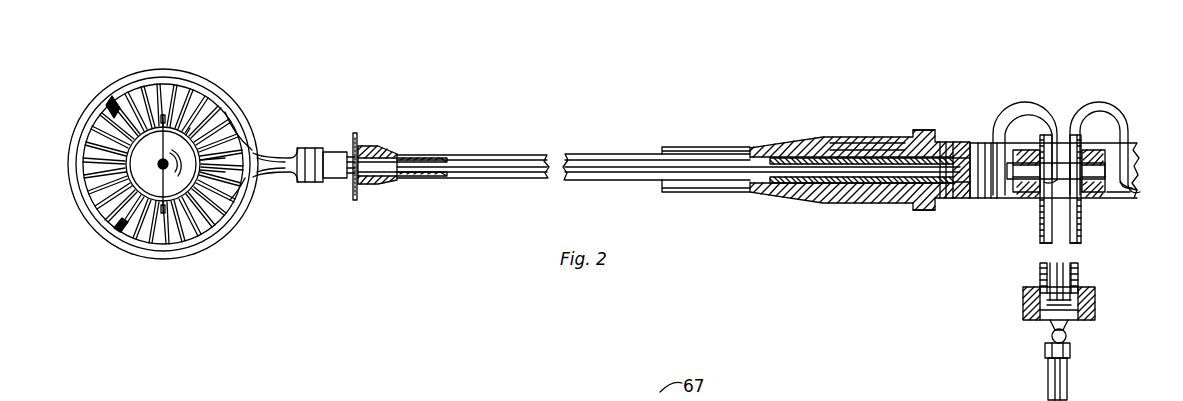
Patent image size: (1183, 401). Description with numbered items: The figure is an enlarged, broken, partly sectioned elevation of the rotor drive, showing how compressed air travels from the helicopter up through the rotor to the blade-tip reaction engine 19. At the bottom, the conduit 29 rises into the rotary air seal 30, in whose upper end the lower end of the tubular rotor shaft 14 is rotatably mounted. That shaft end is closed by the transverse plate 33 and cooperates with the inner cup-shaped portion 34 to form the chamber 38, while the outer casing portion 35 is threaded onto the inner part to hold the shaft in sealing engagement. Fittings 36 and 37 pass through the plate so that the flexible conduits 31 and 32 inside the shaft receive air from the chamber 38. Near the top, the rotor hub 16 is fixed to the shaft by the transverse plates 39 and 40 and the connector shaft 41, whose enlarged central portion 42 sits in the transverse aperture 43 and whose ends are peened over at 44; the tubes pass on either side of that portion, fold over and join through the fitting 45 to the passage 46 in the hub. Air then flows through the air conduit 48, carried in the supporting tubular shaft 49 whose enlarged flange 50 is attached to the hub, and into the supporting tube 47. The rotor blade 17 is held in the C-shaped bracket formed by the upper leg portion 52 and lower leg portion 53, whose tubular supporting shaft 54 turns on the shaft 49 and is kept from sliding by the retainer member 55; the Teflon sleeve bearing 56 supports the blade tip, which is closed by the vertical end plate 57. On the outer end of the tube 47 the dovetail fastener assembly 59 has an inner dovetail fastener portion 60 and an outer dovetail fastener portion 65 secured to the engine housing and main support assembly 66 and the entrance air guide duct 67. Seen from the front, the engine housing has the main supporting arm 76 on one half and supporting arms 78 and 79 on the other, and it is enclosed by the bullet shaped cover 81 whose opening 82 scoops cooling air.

The rotor shaft 14 is at (1088, 217).
The rotor hub 16 is at (982, 140).
The rotor blade 17 is at (507, 152).
The reaction engine 19 is at (162, 66).
The conduit 29 is at (1067, 386).
The rotary air seal 30 is at (1020, 298).
The flexible conduit 31 is at (1046, 244).
The flexible conduit 32 is at (1076, 244).
The transverse plate 33 is at (1066, 325).
The inner cup-shaped portion 34 is at (1070, 348).
The outer casing portion 35 is at (1095, 302).
The fitting 36 is at (1040, 280).
The fitting 37 is at (1078, 282).
The chamber 38 is at (1052, 327).
The transverse plate 39 is at (1040, 163).
The transverse plate 40 is at (1130, 198).
The connector shaft 41 is at (1122, 188).
The enlarged central portion 42 is at (1086, 163).
The transverse aperture 43 is at (1060, 135).
The peened ends 44 is at (982, 205).
The fitting 45 is at (968, 200).
The passage 46 is at (958, 190).
The supporting tube 47 is at (434, 156).
The air conduit 48 is at (810, 170).
The supporting tubular shaft 49 is at (885, 157).
The enlarged flange 50 is at (953, 148).
The upper leg portion 52 is at (672, 147).
The lower leg portion 53 is at (664, 192).
The tubular supporting shaft 54 is at (872, 138).
The retainer member 55 is at (940, 130).
The sleeve bearing 56 is at (376, 184).
The vertical end plate 57 is at (353, 190).
The dovetail fastener assembly 59 is at (300, 145).
The inner dovetail fastener portion 60 is at (335, 150).
The outer dovetail fastener portion 65 is at (303, 169).
The engine housing and main support assembly 66 is at (224, 148).
The entrance air guide duct 67 is at (243, 110).
The main supporting arm 76 is at (243, 200).
The supporting arm 78 is at (125, 100).
The supporting arm 79 is at (137, 216).
The bullet shaped cover 81 is at (190, 138).
The opening 82 is at (160, 164).